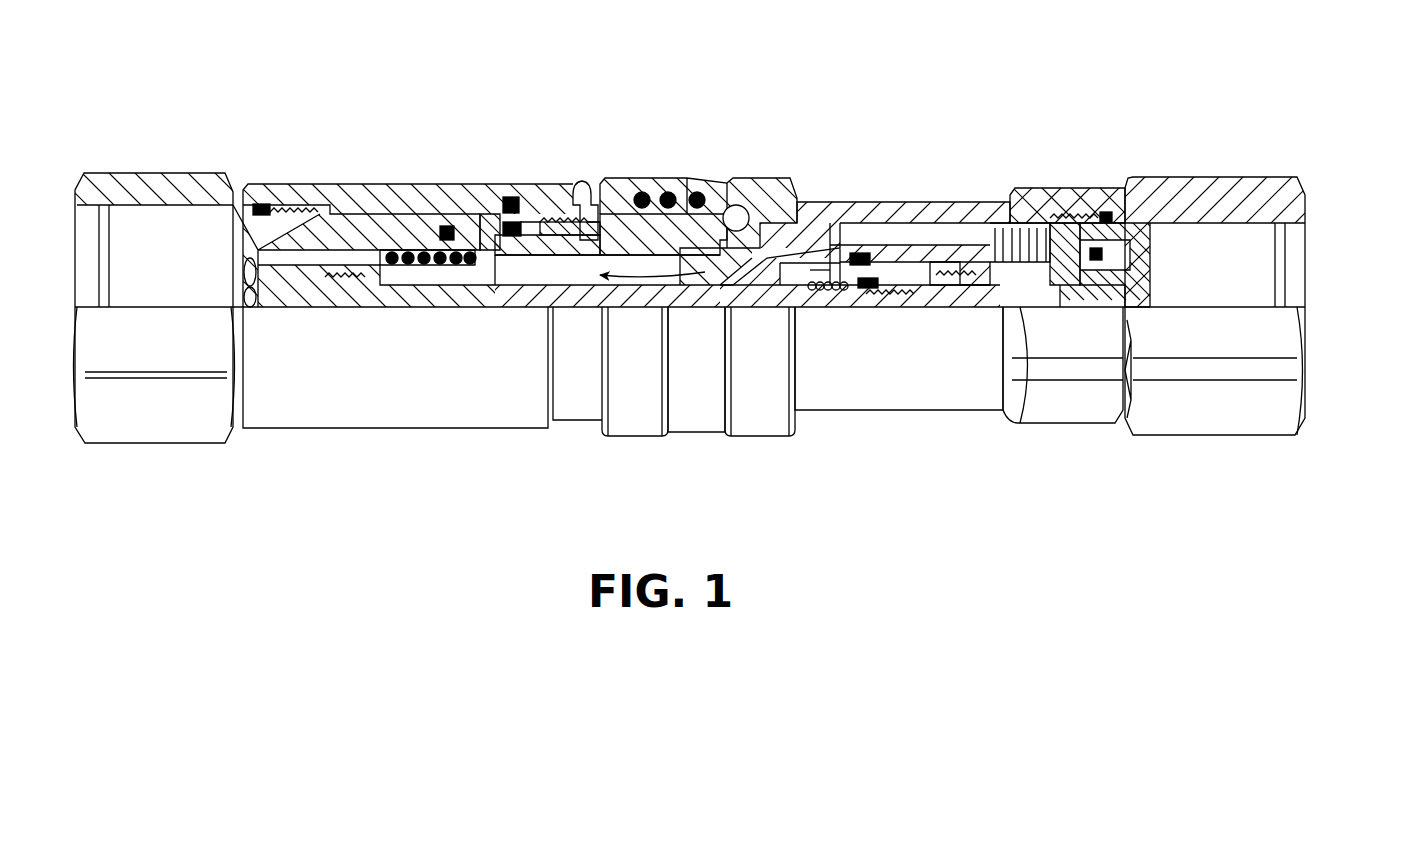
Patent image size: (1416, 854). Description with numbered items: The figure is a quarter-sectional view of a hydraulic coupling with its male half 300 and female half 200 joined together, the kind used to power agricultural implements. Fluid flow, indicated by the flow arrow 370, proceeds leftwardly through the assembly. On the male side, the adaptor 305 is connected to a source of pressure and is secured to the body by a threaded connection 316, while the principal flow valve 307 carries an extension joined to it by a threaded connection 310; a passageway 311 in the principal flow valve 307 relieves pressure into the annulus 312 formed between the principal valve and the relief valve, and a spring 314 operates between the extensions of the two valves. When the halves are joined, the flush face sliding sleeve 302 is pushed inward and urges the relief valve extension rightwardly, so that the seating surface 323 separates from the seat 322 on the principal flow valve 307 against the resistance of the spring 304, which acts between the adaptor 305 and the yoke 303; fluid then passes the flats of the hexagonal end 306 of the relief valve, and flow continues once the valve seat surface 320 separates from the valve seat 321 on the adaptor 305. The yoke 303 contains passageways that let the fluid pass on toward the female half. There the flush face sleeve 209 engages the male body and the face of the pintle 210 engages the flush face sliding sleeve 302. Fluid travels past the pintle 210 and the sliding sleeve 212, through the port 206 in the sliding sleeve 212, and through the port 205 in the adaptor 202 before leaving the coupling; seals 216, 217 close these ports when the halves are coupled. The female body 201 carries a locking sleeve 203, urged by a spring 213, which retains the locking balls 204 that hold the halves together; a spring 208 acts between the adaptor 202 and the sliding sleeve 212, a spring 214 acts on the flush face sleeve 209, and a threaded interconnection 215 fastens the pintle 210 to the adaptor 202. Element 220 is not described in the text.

The female half 200 is at (742, 264).
The body 201 is at (290, 198).
The adaptor 202 is at (125, 192).
The locking sleeve 203 is at (742, 197).
The locking balls or detents 204 is at (788, 192).
The port 205 is at (468, 290).
The port 206 is at (496, 290).
The spring 208 is at (433, 187).
The flush face sleeve 209 is at (656, 200).
The pintle 210 is at (657, 308).
The sliding sleeve 212 is at (595, 312).
The spring 213 is at (693, 197).
The spring 214 is at (560, 240).
The threaded interconnection 215 is at (346, 288).
The seal 216 is at (518, 195).
The seal 217 is at (455, 215).
The poppet button 220 is at (584, 182).
The male half 300 is at (1064, 313).
The flush face sliding sleeve 302 is at (722, 310).
The yoke 303 is at (940, 202).
The spring 304 is at (1012, 195).
The adaptor 305 is at (1267, 266).
The hexagonal end 306 is at (1090, 288).
The principal flow valve 307 is at (1213, 205).
The threaded connection 310 is at (943, 300).
The passageway 311 is at (1003, 295).
The annulus 312 is at (968, 300).
The spring 314 is at (830, 290).
The threaded connection 316 is at (912, 303).
The valve seat surface 320 is at (1070, 262).
The valve seat 321 is at (1053, 208).
The seat 322 is at (1075, 300).
The seating surface 323 is at (1085, 290).
The flow arrow 370 is at (443, 213).